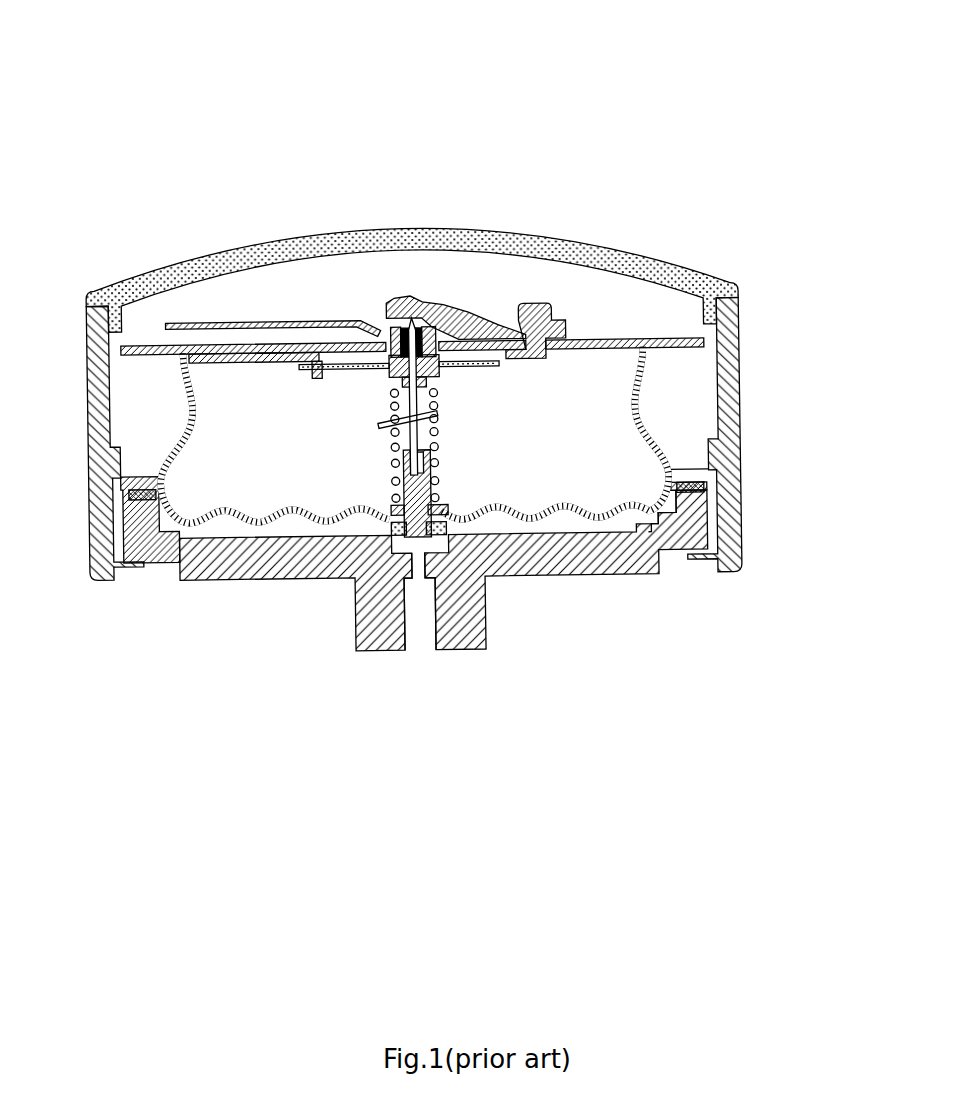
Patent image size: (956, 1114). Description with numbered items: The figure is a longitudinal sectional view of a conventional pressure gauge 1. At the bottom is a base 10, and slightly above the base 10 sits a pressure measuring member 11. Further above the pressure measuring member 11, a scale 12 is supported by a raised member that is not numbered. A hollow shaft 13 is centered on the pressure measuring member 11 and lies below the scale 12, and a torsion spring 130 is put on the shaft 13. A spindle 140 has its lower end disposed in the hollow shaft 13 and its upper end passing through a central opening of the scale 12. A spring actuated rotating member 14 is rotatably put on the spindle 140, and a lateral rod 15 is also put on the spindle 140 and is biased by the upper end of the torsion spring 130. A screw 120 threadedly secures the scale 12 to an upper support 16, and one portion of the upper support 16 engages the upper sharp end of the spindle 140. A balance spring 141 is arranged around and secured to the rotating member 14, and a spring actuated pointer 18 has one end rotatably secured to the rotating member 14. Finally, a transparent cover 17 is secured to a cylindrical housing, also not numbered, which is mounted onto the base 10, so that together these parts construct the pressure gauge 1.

The pressure gauge 1 is at (236, 72).
The base 10 is at (630, 560).
The pressure measuring member 11 is at (505, 517).
The scale 12 is at (693, 347).
The screw 120 is at (537, 306).
The hollow shaft 13 is at (388, 507).
The torsion spring 130 is at (397, 555).
The rotating member 14 is at (379, 314).
The spindle 140 is at (429, 322).
The balance spring 141 is at (497, 368).
The lateral rod 15 is at (380, 426).
The upper support 16 is at (465, 307).
The transparent cover 17 is at (693, 273).
The pointer 18 is at (273, 320).